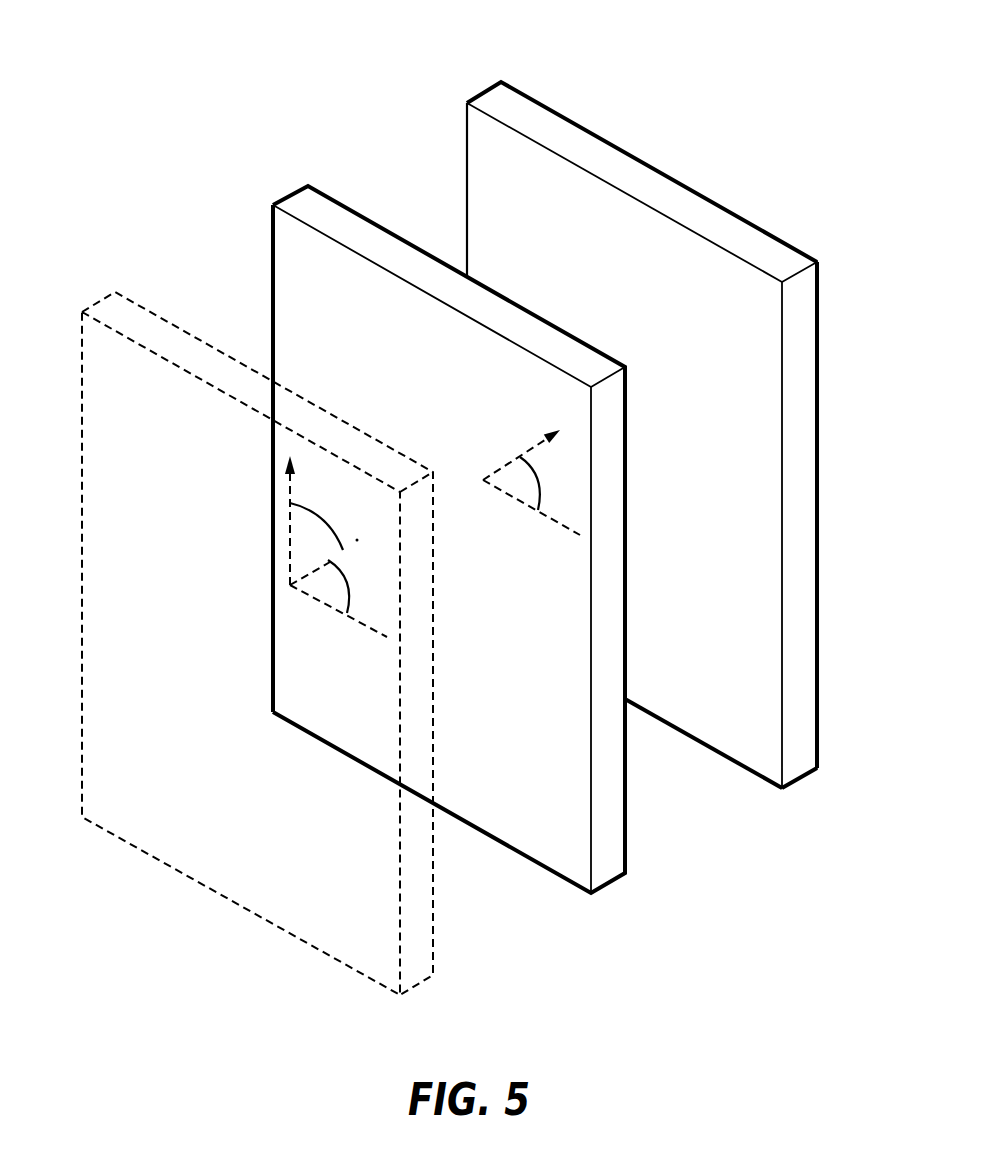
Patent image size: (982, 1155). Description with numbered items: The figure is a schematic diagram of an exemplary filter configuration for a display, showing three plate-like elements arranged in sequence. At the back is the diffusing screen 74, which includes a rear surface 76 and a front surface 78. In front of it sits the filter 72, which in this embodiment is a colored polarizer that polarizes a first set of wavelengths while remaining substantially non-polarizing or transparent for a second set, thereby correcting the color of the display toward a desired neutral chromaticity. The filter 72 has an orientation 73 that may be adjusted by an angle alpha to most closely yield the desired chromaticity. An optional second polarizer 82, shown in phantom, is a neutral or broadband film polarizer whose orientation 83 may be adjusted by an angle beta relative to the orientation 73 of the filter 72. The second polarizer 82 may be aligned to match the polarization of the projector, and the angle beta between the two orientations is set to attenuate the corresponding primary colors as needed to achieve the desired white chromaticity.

The filter 72 is at (496, 569).
The orientation of the filter 73 is at (580, 503).
The diffusing screen 74 is at (797, 783).
The rear surface 76 is at (800, 301).
The front surface 78 is at (651, 448).
The second polarizer 82 is at (272, 643).
The orientation angle 83 is at (280, 604).